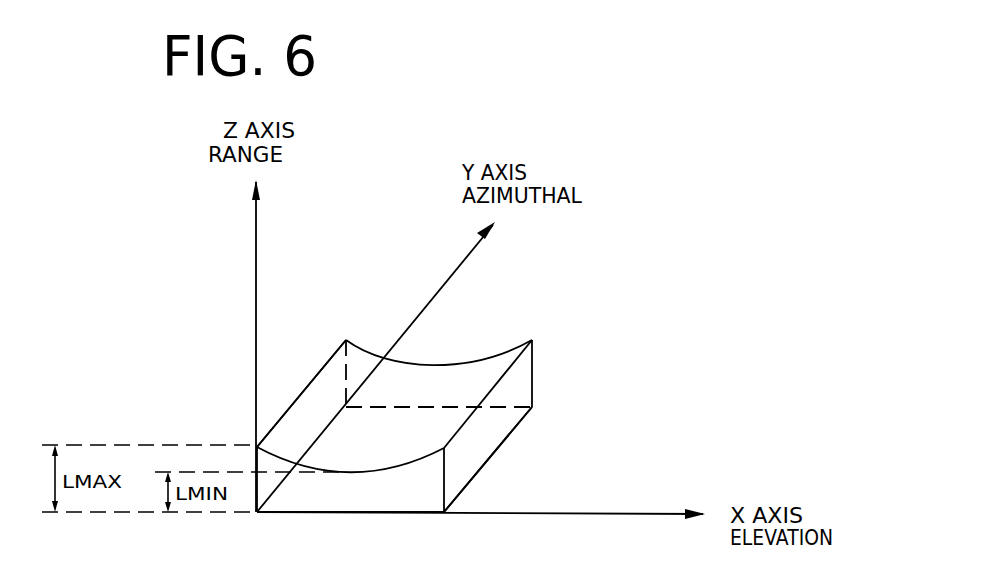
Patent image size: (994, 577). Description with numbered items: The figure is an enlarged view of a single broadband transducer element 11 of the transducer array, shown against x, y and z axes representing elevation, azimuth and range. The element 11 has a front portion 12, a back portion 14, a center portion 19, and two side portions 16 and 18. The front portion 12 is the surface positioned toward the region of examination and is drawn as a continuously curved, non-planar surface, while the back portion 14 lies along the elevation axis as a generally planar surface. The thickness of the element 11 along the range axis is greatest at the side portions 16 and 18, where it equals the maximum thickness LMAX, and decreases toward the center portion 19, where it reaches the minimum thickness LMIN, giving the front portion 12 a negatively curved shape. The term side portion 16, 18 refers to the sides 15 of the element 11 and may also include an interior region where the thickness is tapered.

The transducer element 11 is at (458, 477).
The front portion 12 is at (415, 377).
The back portion 14 is at (397, 512).
The sides 15 is at (313, 375).
The side portion 16 is at (268, 518).
The side portion 18 is at (435, 520).
The center portion 19 is at (357, 520).